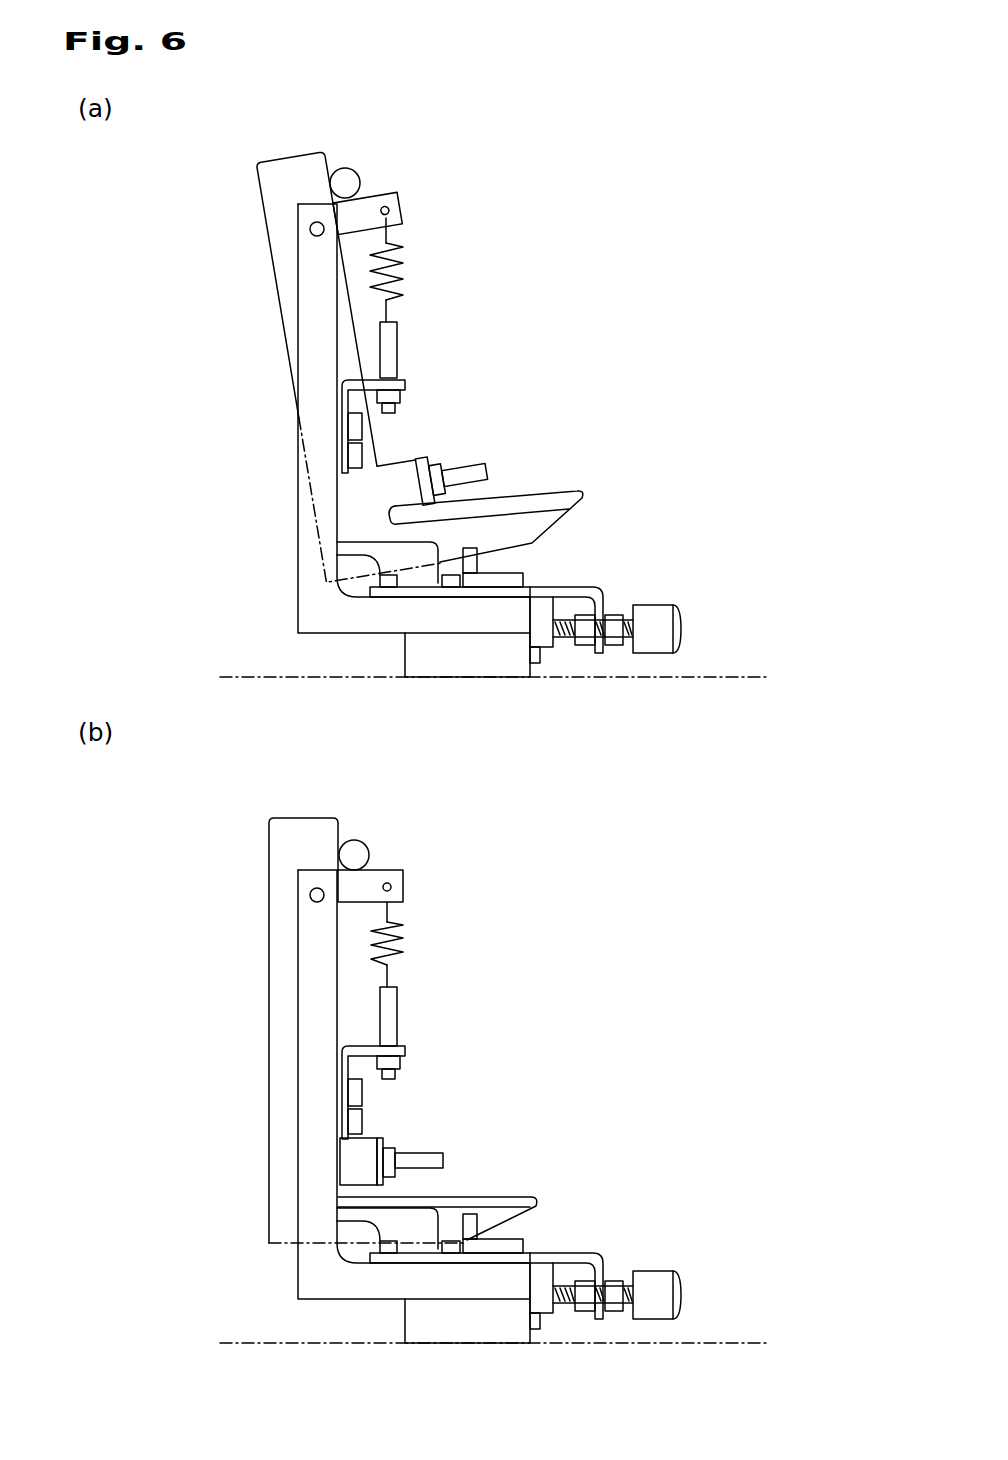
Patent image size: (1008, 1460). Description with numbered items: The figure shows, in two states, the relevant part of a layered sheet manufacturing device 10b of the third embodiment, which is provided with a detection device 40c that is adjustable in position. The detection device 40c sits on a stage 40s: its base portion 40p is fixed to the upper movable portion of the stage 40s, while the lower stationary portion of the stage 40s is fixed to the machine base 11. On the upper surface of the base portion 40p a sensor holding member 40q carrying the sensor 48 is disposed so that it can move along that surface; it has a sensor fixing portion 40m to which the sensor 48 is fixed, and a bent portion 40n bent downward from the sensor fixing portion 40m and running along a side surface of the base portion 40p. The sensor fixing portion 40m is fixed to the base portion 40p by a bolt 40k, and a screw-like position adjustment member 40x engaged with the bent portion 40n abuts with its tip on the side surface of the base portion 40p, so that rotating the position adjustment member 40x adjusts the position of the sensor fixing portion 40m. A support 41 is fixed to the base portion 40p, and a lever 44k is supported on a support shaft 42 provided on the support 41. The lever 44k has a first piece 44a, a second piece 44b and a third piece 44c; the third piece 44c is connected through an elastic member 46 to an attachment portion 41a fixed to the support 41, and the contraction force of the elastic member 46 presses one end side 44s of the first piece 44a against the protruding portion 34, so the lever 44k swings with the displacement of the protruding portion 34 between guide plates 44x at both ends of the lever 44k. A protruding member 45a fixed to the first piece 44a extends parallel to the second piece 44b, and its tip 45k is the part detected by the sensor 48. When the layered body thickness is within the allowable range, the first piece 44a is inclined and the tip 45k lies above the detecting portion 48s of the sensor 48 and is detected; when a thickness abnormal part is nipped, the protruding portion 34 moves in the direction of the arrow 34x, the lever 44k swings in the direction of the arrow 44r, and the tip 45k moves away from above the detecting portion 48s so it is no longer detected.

The layered sheet manufacturing device 10b is at (797, 203).
The machine base 11 is at (271, 677).
The protruding portion 34 is at (360, 176).
The arrow 34x is at (388, 845).
The detection device 40c is at (578, 293).
The bolt 40k is at (300, 555).
The sensor fixing portion 40m is at (590, 587).
The bent portion 40n is at (602, 612).
The base portion 40p is at (308, 602).
The sensor holding member 40q is at (703, 532).
The stage 40s is at (473, 657).
The position adjustment member 40x is at (663, 628).
The support 41 is at (317, 365).
The attachment portion 41a is at (407, 383).
The support shaft 42 is at (309, 230).
The first piece 44a is at (282, 287).
The second piece 44b is at (535, 495).
The third piece 44c is at (396, 201).
The lever 44k is at (258, 182).
The arrow 44r is at (353, 792).
The one end side 44s is at (290, 172).
The guide plates 44x is at (367, 539).
The protruding member 45a is at (460, 462).
The tip 45k is at (487, 470).
The elastic member 46 is at (407, 281).
The sensor 48 is at (523, 577).
The detecting portion 48s is at (472, 548).